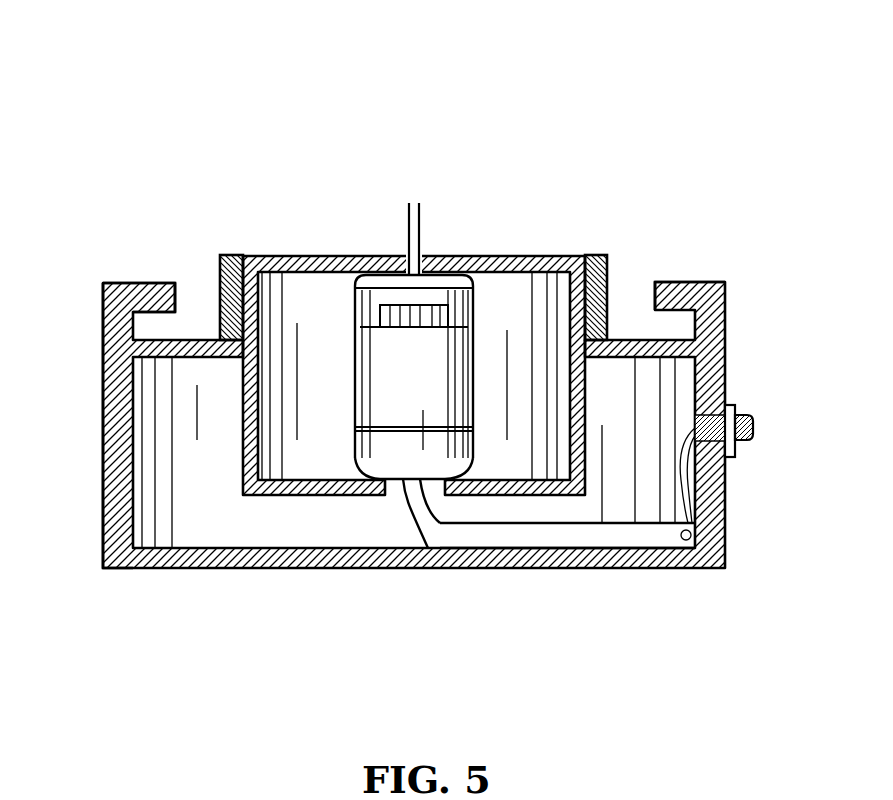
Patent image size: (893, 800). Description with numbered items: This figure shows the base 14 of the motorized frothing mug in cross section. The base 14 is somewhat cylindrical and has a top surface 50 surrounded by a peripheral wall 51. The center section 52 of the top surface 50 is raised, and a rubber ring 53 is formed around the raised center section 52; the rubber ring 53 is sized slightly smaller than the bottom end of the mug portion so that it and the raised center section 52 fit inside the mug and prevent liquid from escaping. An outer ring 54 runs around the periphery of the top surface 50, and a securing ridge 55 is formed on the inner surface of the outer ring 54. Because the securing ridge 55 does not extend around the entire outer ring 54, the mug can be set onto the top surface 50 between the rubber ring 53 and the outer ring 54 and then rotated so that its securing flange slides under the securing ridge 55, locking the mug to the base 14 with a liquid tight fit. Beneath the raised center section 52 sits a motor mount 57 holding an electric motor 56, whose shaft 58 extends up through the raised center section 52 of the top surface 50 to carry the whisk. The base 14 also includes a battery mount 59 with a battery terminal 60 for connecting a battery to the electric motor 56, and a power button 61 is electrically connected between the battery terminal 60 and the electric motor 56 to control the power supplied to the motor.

The base 14 is at (697, 101).
The top surface 50 is at (632, 340).
The peripheral wall 51 is at (103, 412).
The raised center section 52 is at (500, 256).
The rubber ring 53 is at (228, 255).
The outer ring 54 is at (106, 283).
The securing ridge 55 is at (150, 357).
The electric motor 56 is at (357, 453).
The motor mount 57 is at (383, 442).
The shaft 58 is at (420, 233).
The battery mount 59 is at (665, 550).
The battery terminal 60 is at (415, 517).
The power button 61 is at (755, 418).